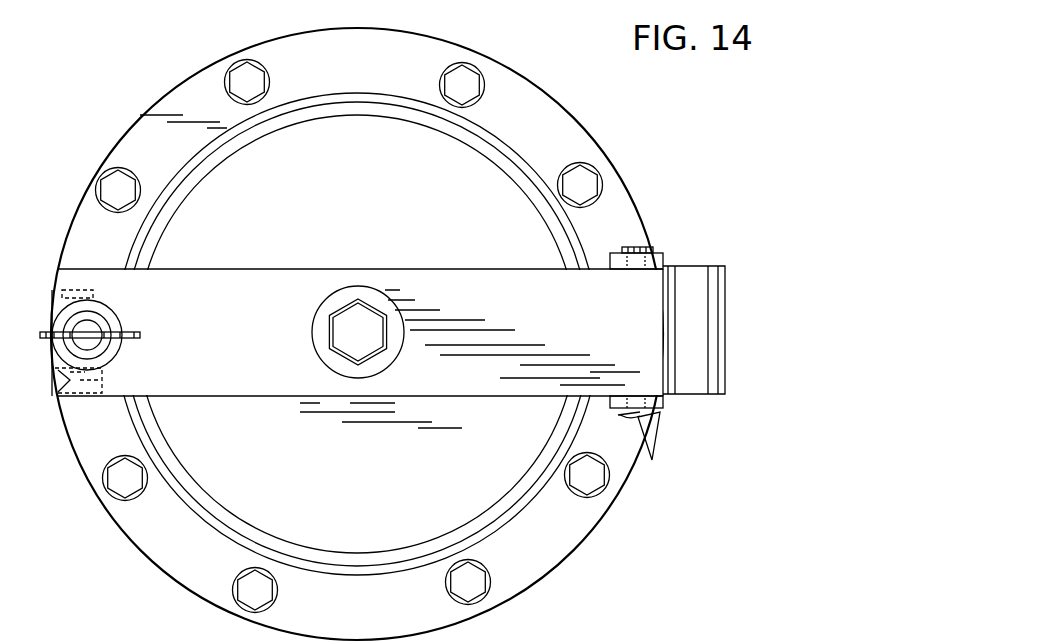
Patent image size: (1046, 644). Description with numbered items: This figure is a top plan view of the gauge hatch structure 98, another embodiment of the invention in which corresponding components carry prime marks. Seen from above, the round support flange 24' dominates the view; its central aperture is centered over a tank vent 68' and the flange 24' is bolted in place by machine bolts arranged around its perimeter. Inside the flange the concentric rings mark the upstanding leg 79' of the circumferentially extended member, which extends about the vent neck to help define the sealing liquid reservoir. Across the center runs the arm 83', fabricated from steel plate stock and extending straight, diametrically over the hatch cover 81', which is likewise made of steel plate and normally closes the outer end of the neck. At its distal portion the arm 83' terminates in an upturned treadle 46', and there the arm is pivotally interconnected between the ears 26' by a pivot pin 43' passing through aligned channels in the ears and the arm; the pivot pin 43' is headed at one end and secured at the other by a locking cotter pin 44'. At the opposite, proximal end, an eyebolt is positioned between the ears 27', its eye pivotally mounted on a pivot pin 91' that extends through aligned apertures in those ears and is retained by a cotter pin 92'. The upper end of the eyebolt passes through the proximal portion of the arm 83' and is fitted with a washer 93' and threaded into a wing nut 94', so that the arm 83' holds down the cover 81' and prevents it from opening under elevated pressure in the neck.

The gauge hatch structure 98 is at (610, 109).
The upstanding leg 79' is at (357, 334).
The tank vent 68' is at (101, 496).
The arm 83' is at (360, 328).
The hatch cover 81' is at (402, 302).
The upturned treadle 46' is at (694, 302).
The ears 26' is at (660, 314).
The pivot pin 43' is at (664, 436).
The locking cotter pin 44' is at (655, 451).
The wing nut 94' is at (113, 335).
The washer 93' is at (109, 348).
The ears 27' is at (76, 317).
The cotter pin 92' is at (57, 355).
The pivot pin 91' is at (45, 410).
The support flange 24' is at (59, 382).